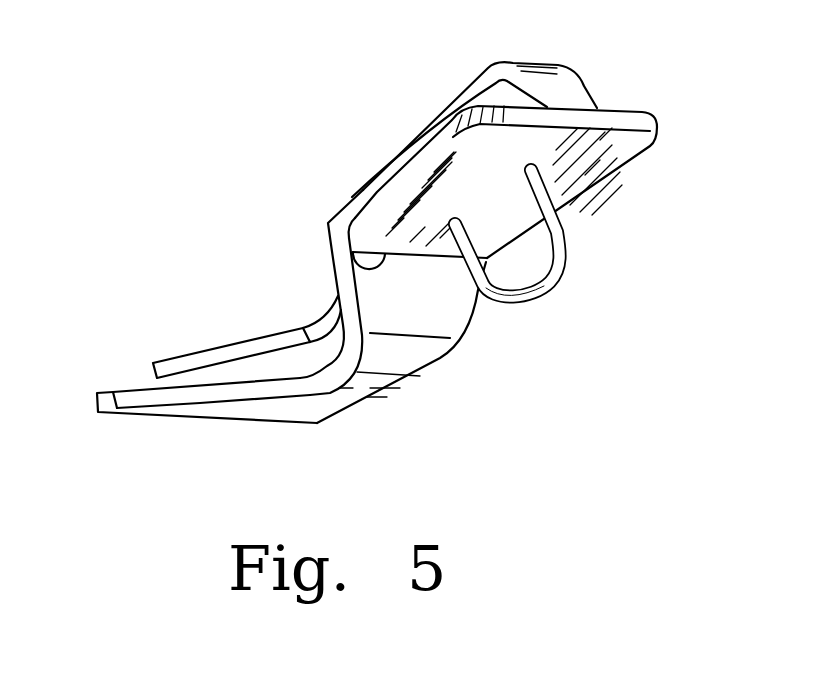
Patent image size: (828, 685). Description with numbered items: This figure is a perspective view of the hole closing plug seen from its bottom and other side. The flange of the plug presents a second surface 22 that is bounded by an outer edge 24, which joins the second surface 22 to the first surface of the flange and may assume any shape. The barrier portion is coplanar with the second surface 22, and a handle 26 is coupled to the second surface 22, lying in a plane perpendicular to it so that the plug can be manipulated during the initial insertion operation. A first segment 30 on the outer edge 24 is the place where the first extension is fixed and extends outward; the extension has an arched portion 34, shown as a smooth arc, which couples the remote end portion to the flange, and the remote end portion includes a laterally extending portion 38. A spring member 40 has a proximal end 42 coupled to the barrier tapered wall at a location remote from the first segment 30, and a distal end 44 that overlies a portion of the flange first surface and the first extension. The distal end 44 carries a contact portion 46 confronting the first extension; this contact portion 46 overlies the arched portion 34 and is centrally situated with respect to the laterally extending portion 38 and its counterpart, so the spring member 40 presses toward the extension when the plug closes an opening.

The second surface 22 is at (618, 166).
The outer edge 24 is at (645, 116).
The handle 26 is at (542, 284).
The first segment 30 is at (351, 262).
The arched portion 34 is at (350, 379).
The laterally extending portion 38 is at (127, 409).
The spring member 40 is at (531, 62).
The proximal end 42 is at (583, 100).
The distal end 44 is at (189, 357).
The contact portion 46 is at (298, 329).